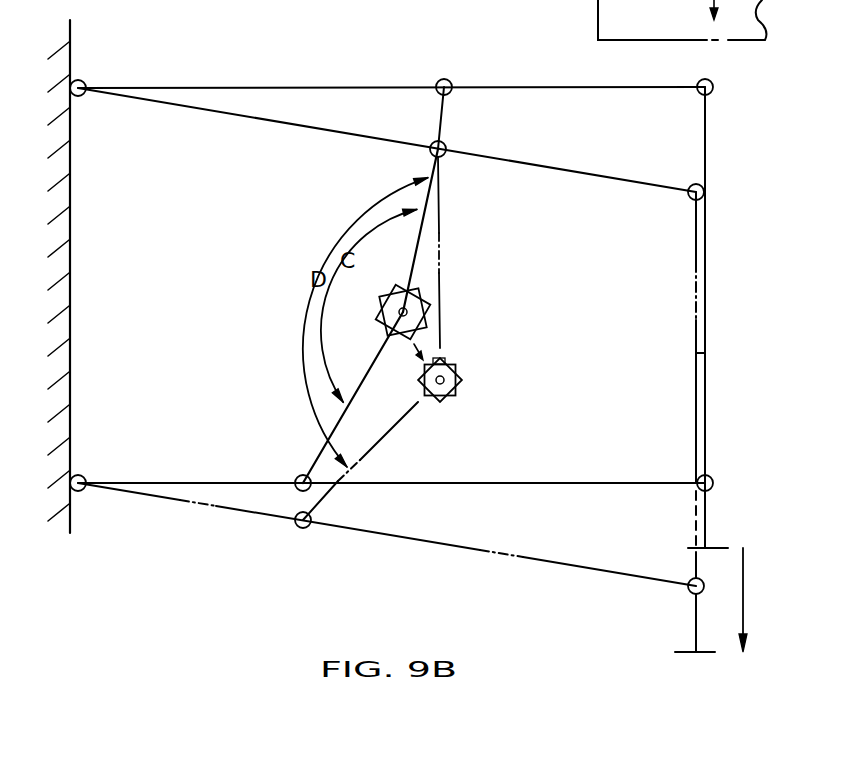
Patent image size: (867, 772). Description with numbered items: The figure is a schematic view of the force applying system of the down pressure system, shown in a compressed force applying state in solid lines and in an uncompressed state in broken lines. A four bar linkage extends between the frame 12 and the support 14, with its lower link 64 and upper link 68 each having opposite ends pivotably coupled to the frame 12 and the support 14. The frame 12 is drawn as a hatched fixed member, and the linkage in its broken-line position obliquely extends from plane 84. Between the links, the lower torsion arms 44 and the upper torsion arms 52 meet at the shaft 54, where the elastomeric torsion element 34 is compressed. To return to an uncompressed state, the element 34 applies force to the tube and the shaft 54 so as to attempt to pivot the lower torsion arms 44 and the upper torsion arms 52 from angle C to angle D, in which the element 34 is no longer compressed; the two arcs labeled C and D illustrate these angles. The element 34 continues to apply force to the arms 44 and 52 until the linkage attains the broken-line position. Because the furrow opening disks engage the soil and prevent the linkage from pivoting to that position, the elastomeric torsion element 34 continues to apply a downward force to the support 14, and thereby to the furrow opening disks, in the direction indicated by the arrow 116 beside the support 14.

The frame 12 is at (71, 312).
The support 14 is at (707, 155).
The elastomeric torsion element 34 is at (415, 247).
The lower torsion arms 44 is at (371, 366).
The upper torsion arms 52 is at (446, 302).
The shaft 54 is at (398, 284).
The lower link 64 is at (557, 478).
The upper link 68 is at (558, 88).
The plane 84 is at (71, 53).
The arrow 116 is at (745, 593).